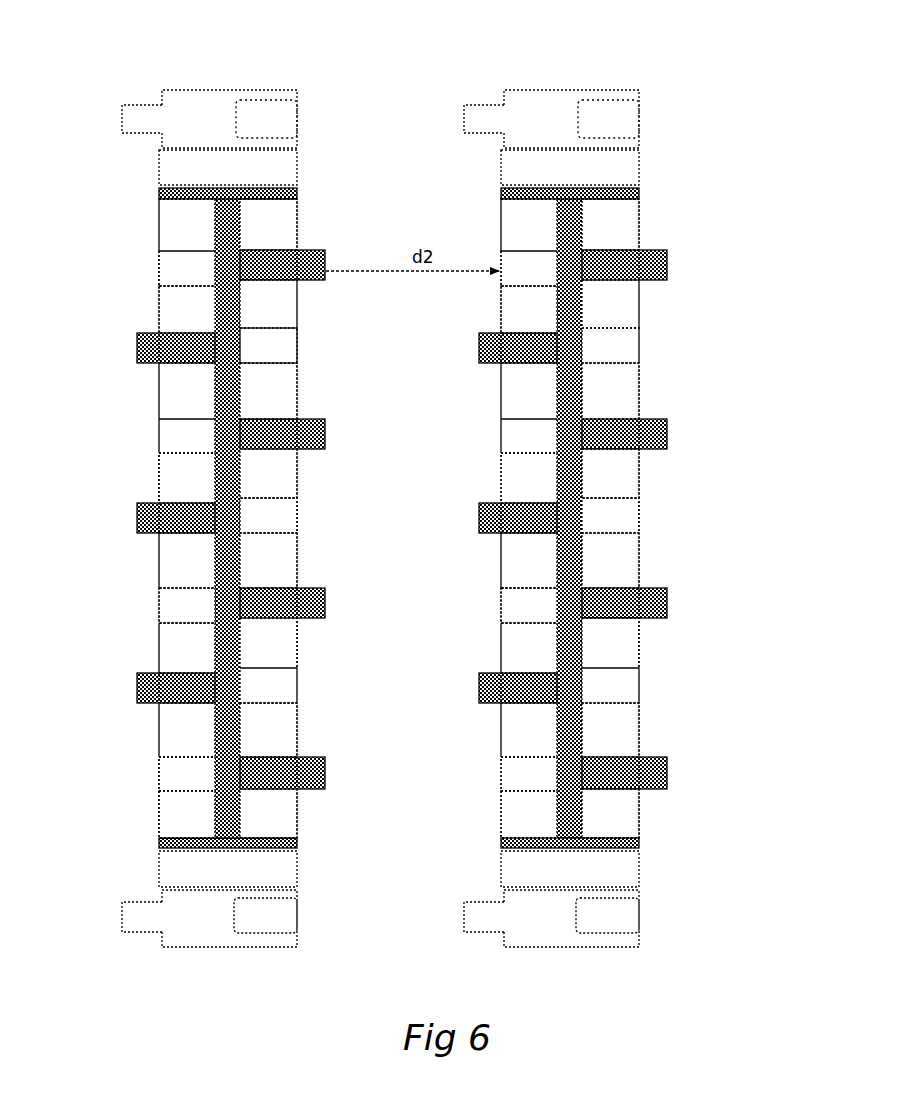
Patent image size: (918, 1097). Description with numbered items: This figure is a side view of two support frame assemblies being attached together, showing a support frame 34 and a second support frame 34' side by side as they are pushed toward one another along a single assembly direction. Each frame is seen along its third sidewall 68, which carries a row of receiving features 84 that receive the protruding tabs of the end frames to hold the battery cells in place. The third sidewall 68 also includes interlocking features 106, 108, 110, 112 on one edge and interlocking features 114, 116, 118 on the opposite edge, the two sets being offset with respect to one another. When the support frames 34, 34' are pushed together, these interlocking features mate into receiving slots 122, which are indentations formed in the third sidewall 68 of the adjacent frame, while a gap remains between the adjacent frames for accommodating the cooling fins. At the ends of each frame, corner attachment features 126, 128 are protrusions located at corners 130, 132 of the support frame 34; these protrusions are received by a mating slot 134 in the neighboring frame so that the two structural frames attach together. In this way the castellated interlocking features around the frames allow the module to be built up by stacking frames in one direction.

The support frame 34 is at (570, 449).
The support frame 34' is at (228, 449).
The third sidewall 68 is at (143, 276).
The receiving features 84 is at (621, 823).
The interlocking feature 106 is at (325, 243).
The interlocking feature 108 is at (325, 412).
The interlocking feature 110 is at (325, 582).
The interlocking feature 112 is at (325, 752).
The interlocking feature 114 is at (138, 357).
The interlocking feature 116 is at (138, 527).
The interlocking feature 118 is at (138, 695).
The receiving slots 122 is at (640, 350).
The corner attachment feature 126 is at (137, 112).
The corner attachment feature 128 is at (133, 920).
The corner 130 is at (88, 95).
The corner 132 is at (129, 955).
The mating slot 134 is at (264, 100).